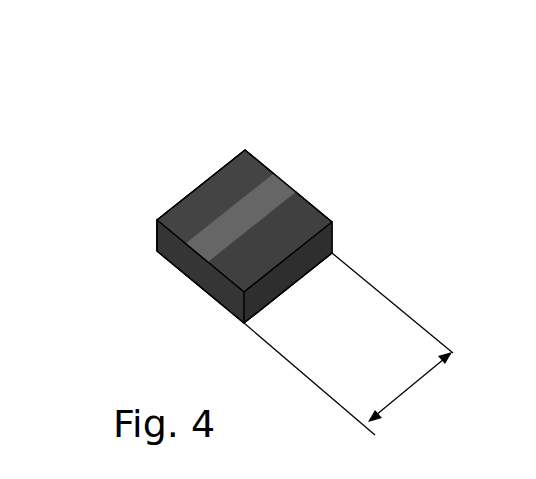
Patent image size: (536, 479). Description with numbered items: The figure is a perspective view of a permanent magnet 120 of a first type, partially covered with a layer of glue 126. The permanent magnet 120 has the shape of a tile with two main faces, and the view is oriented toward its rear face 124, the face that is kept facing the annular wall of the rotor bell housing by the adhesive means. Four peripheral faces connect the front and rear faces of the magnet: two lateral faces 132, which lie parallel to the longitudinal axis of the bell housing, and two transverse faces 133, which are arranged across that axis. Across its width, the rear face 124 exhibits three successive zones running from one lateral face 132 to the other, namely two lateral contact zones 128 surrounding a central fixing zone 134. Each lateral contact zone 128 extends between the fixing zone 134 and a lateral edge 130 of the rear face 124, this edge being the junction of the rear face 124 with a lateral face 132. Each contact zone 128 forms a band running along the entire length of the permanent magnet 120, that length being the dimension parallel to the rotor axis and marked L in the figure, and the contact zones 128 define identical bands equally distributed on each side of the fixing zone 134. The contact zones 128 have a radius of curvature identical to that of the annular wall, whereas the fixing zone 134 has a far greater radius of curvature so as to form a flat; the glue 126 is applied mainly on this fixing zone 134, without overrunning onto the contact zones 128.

The permanent magnet 120 is at (186, 124).
The rear face 124 is at (247, 140).
The glue 126 is at (280, 188).
The lateral contact zone 128 is at (263, 158).
The lateral edge 130 is at (158, 217).
The lateral face 132 is at (317, 267).
The transverse face 133 is at (192, 283).
The fixing zone 134 is at (194, 258).
The length L is at (348, 344).